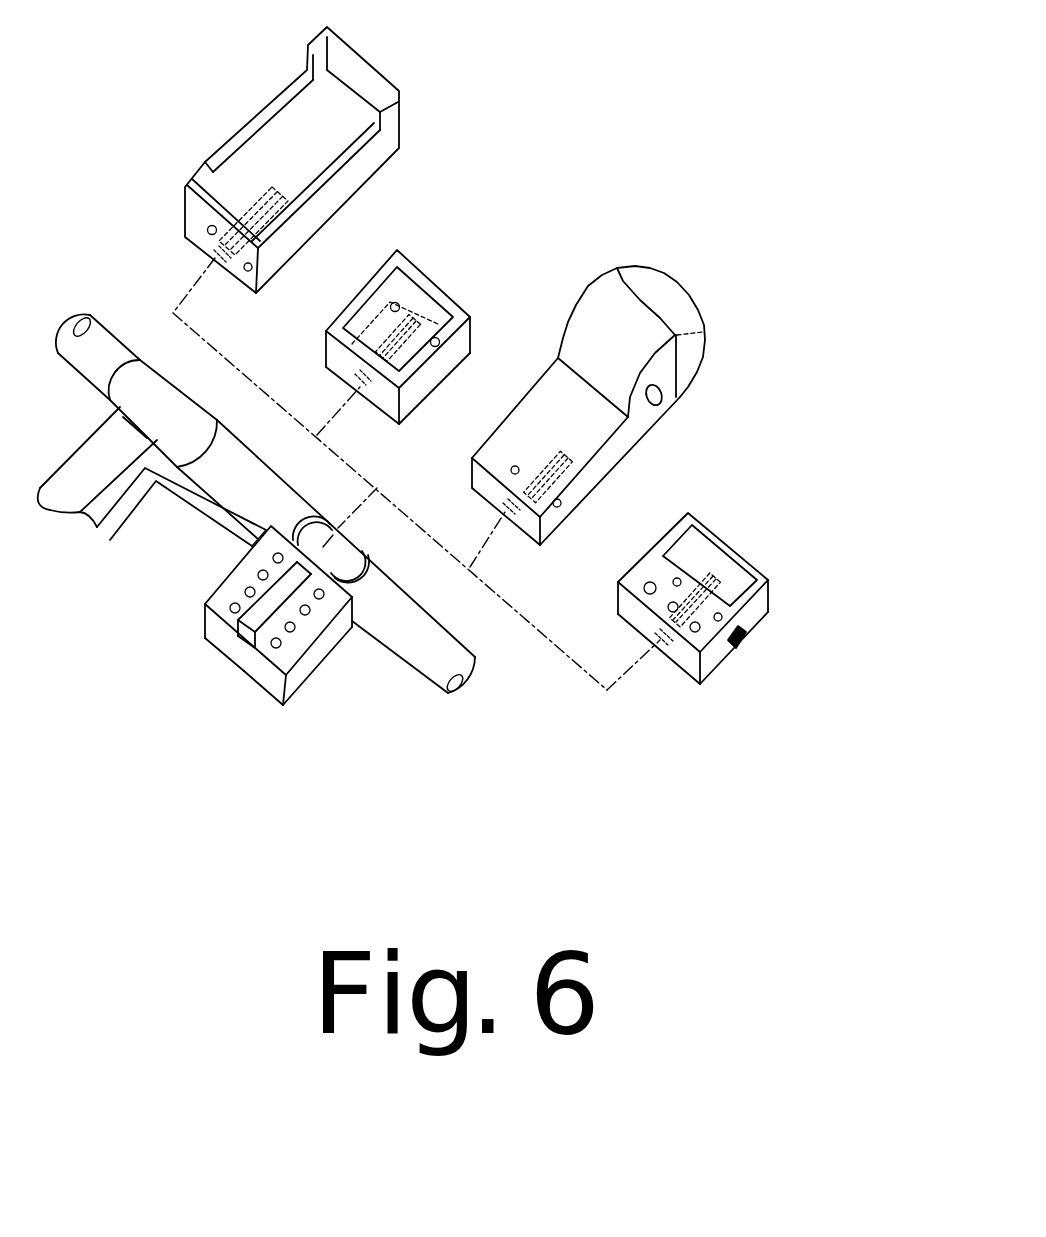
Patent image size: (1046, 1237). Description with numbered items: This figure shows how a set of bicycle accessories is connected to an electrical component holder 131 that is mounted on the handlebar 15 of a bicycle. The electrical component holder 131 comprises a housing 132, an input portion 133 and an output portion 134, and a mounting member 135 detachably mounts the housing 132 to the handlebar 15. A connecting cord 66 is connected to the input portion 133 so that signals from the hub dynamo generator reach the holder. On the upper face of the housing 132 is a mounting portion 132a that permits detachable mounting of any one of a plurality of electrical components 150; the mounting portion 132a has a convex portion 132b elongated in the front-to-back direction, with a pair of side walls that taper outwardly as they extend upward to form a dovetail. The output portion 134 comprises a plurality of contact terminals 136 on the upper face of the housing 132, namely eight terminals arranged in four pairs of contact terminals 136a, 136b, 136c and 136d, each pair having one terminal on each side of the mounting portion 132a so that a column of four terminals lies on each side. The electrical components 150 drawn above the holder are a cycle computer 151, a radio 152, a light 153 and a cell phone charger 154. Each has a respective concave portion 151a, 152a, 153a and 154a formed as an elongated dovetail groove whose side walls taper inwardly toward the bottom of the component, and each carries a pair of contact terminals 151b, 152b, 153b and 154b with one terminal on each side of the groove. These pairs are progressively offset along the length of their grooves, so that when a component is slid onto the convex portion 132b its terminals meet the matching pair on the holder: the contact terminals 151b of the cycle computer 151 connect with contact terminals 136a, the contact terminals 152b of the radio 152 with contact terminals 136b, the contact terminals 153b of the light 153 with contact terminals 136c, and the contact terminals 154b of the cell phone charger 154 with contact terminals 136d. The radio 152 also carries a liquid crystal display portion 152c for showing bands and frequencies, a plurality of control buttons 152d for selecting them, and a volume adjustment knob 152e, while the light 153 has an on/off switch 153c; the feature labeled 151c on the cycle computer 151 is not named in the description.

The handlebar 15 is at (428, 620).
The connecting cord 66 is at (215, 508).
The electrical component holder 131 is at (248, 606).
The housing 132 is at (262, 676).
The mounting portion 132a is at (222, 645).
The convex portion 132b is at (242, 662).
The input portion 133 is at (232, 557).
The output portion 134 is at (205, 616).
The mounting member 135 is at (322, 514).
The contact terminals 136 is at (222, 604).
The contact terminals 136a is at (323, 603).
The contact terminals 136b is at (307, 618).
The contact terminals 136c is at (291, 635).
The contact terminals 136d is at (278, 651).
The electrical components 150 is at (680, 128).
The cycle computer 151 is at (462, 283).
The concave portion 151a is at (355, 384).
The contact terminals 151b is at (439, 350).
The holder hole 151c is at (403, 302).
The radio 152 is at (792, 572).
The concave portion 152a is at (658, 645).
The contact terminals 152b is at (716, 640).
The liquid crystal display portion 152c is at (742, 590).
The control buttons 152d is at (688, 648).
The volume adjustment knob 152e is at (742, 640).
The light 153 is at (678, 268).
The concave portion 153a is at (505, 508).
The contact terminals 153b is at (562, 504).
The on/off switch 153c is at (664, 398).
The cell phone charger 154 is at (410, 82).
The concave portion 154a is at (215, 256).
The contact terminals 154b is at (247, 272).